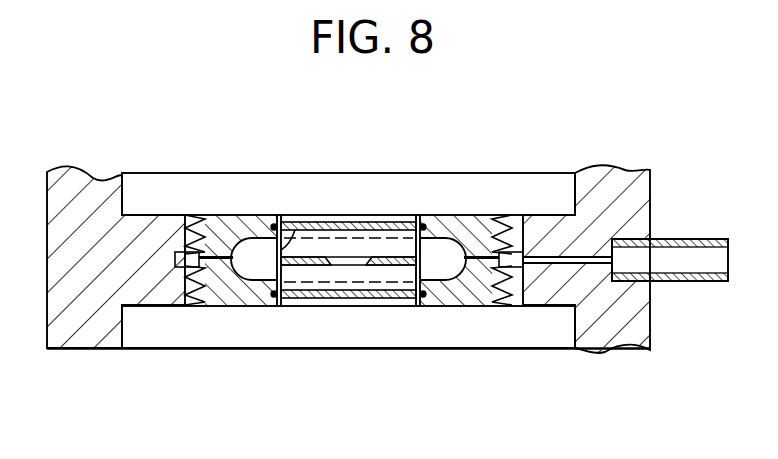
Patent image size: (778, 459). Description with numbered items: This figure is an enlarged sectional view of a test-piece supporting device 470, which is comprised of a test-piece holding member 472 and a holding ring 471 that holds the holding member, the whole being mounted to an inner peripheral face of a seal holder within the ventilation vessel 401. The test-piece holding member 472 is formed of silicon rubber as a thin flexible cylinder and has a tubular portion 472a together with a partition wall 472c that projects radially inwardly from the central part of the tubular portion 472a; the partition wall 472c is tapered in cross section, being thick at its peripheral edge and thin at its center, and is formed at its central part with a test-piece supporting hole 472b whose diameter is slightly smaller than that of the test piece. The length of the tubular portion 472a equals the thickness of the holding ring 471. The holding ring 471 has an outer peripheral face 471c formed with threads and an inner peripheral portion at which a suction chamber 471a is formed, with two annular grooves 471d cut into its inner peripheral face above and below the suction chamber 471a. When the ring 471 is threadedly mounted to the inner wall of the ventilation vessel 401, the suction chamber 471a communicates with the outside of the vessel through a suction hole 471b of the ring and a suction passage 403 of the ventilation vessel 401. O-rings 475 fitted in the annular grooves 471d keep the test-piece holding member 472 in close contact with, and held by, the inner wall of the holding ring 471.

The ventilation vessel 401 is at (90, 180).
The suction passage 403 is at (553, 257).
The test-piece supporting device 470 is at (465, 313).
The holding ring 471 is at (333, 259).
The suction chamber 471a is at (258, 250).
The suction hole 471b is at (225, 262).
The outer peripheral face 471c is at (188, 292).
The annular grooves 471d is at (273, 284).
The test-piece holding member 472 is at (370, 245).
The tubular portion 472a is at (293, 237).
The test-piece supporting hole 472b is at (382, 270).
The partition wall 472c is at (318, 258).
The O-rings 475 is at (398, 226).